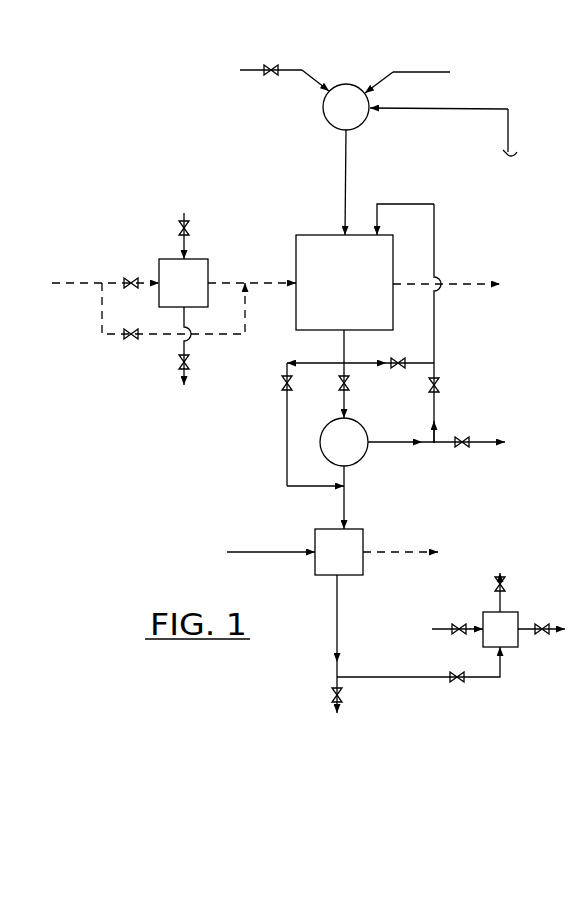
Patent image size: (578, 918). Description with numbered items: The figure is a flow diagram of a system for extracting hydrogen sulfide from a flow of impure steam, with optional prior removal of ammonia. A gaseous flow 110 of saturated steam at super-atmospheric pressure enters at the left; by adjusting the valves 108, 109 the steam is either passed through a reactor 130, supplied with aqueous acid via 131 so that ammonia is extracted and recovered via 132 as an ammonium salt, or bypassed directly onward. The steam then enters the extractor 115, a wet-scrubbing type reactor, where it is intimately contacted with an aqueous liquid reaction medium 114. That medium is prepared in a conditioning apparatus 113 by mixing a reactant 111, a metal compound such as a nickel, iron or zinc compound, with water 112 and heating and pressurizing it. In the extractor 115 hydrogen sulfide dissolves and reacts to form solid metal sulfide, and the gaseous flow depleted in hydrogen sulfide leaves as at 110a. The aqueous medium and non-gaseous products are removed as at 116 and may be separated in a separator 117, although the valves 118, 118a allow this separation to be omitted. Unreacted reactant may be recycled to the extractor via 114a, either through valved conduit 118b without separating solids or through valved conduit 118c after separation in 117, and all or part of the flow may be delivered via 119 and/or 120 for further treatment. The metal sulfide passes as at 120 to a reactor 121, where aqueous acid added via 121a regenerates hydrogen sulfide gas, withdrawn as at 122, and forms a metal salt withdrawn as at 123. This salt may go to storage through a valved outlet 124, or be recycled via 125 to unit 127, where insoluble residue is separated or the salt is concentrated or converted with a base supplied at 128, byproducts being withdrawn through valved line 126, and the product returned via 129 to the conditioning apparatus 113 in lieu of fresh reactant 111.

The valve 108 is at (125, 342).
The valve 109 is at (128, 276).
The gaseous flow 110 is at (70, 281).
The gaseous flow depleted in hydrogen sulfide 110a is at (452, 285).
The reactant 111 is at (420, 70).
The water 112 is at (254, 70).
The conditioning apparatus 113 is at (323, 110).
The aqueous liquid reaction medium 114 is at (342, 186).
The recycle line 114a is at (436, 229).
The extractor 115 is at (318, 235).
The outlet for aqueous reaction medium and non-gaseous products 116 is at (340, 353).
The separator 117 is at (360, 460).
The valve 118 is at (352, 385).
The valve 118a is at (284, 386).
The valved conduit 118b is at (420, 362).
The valved conduit 118c is at (436, 415).
The delivery line 119 is at (440, 446).
The line to reactor 120 is at (346, 512).
The reactor 121 is at (314, 535).
The acid inlet 121a is at (283, 555).
The hydrogen sulfide outlet 122 is at (380, 552).
The metal salt outlet 123 is at (340, 626).
The valved outlet 124 is at (342, 697).
The recycle line 125 is at (425, 680).
The valved line 126 is at (525, 632).
The separation and treatment unit 127 is at (519, 615).
The base supply 128 is at (470, 629).
The recycle line 129 is at (428, 109).
The reactor 130 is at (209, 262).
The acid supply 131 is at (190, 228).
The ammonium salt outlet 132 is at (190, 363).